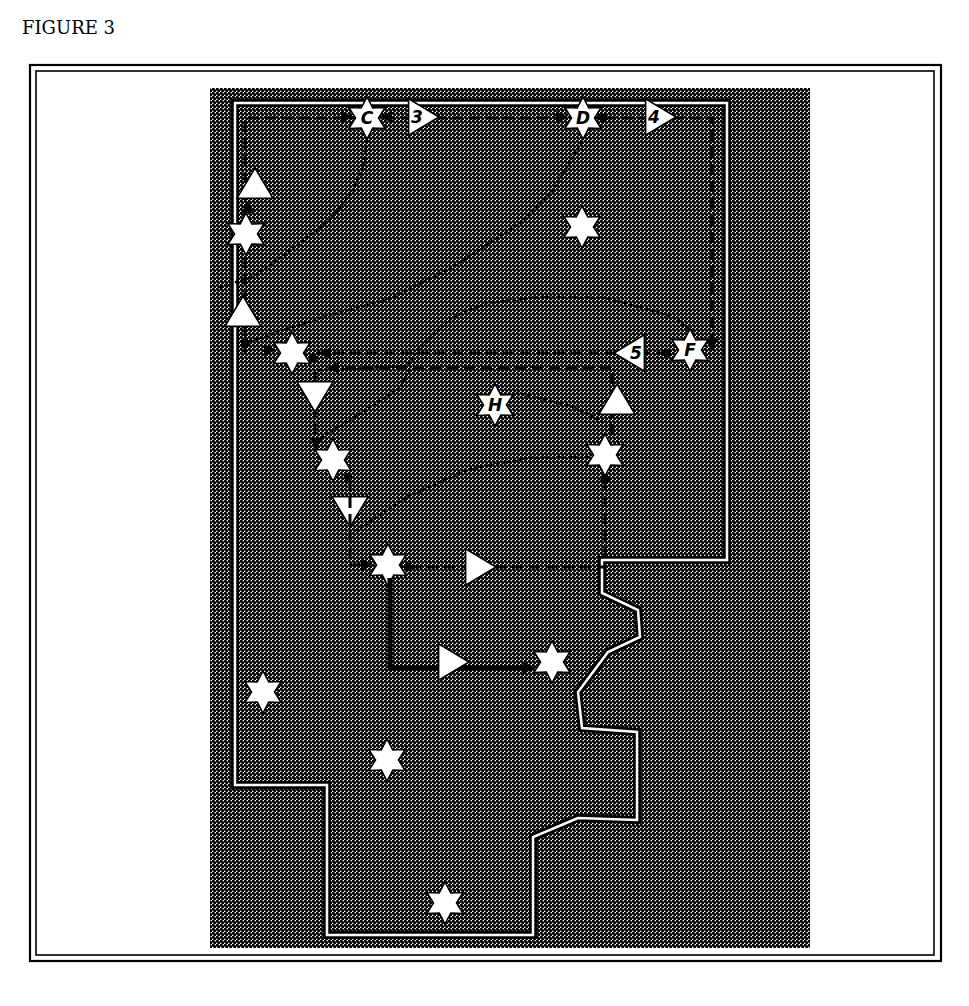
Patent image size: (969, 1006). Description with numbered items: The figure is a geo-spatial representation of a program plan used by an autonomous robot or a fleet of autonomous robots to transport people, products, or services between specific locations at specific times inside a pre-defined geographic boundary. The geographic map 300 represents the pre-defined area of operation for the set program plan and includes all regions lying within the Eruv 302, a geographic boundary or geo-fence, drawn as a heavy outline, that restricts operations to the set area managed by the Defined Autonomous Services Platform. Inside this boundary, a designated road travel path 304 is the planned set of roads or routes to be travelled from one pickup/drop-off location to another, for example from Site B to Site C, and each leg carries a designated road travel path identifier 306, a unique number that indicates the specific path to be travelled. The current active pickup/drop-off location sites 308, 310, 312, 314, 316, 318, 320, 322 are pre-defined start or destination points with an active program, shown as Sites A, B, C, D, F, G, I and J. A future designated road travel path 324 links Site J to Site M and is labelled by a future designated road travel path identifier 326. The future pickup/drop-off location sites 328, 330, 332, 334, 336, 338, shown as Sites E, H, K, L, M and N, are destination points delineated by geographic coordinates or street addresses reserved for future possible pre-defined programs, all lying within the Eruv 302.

The geographic map 300 is at (225, 103).
The Eruv 302 is at (230, 142).
The designated road travel path 304 is at (247, 160).
The designated road travel path identifier 306 is at (240, 208).
The current active pickup/drop-off location site 308 is at (222, 243).
The current active pickup/drop-off location site 310 is at (220, 287).
The current active pickup/drop-off location site 312 is at (245, 343).
The current active pickup/drop-off location site 314 is at (320, 370).
The current active pickup/drop-off location site 316 is at (313, 440).
The current active pickup/drop-off location site 318 is at (340, 480).
The current active pickup/drop-off location site 320 is at (347, 537).
The current active pickup/drop-off location site 322 is at (367, 563).
The future designated road travel path 324 is at (388, 628).
The future designated road travel path identifier 326 is at (430, 659).
The future pickup/drop-off location site 328 is at (600, 228).
The future pickup/drop-off location site 330 is at (620, 462).
The future pickup/drop-off location site 332 is at (570, 668).
The future pickup/drop-off location site 334 is at (285, 691).
The future pickup/drop-off location site 336 is at (393, 773).
The future pickup/drop-off location site 338 is at (465, 905).